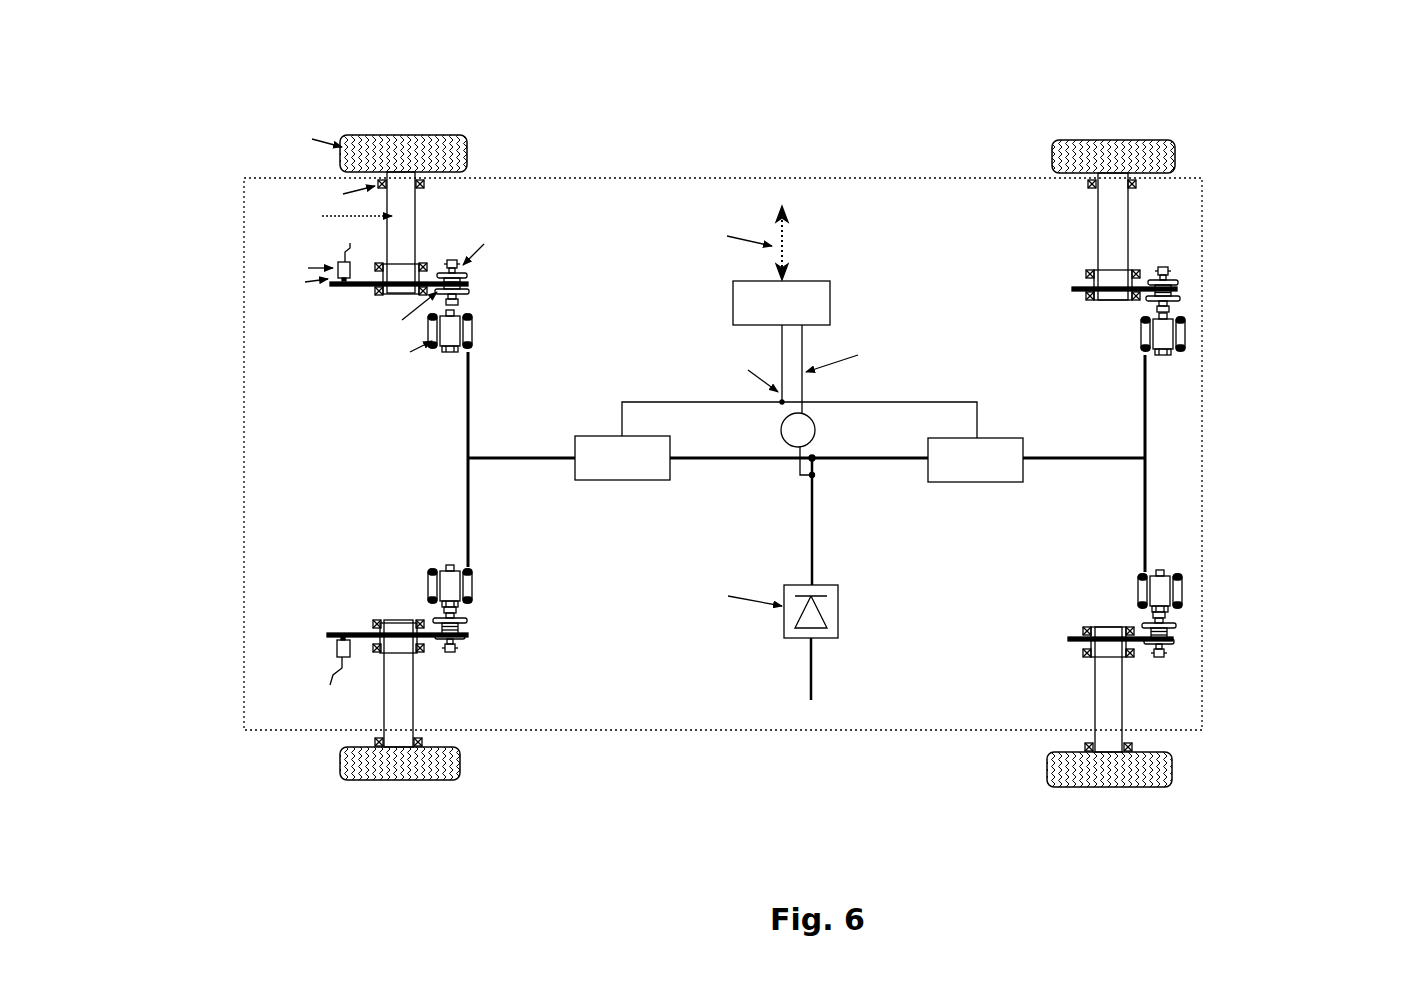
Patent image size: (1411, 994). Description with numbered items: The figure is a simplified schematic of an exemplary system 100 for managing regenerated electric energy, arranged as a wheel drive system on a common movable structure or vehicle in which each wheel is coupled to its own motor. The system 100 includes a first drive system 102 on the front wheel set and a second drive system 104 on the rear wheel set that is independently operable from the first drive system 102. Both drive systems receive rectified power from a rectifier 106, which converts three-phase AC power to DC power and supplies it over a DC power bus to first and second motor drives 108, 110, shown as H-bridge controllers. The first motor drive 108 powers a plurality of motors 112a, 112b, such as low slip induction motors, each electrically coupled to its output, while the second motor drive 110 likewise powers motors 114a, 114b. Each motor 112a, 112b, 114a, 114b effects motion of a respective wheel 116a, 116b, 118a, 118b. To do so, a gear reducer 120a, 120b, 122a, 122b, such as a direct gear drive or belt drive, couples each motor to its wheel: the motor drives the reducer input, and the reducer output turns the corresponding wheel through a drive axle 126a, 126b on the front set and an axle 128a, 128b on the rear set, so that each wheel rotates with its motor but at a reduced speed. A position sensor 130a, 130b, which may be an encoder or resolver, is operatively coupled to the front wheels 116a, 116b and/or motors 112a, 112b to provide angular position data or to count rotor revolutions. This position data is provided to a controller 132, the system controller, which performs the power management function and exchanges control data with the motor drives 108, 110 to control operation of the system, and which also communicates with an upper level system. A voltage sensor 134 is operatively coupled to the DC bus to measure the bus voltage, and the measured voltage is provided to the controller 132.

The system 100 is at (295, 67).
The first drive system 102 is at (597, 136).
The second drive system 104 is at (938, 162).
The rectifier 106 is at (840, 720).
The first motor drive 108 is at (607, 481).
The second motor drive 110 is at (975, 483).
The motor 112a is at (473, 327).
The motor 112b is at (473, 580).
The motor 114a is at (1185, 325).
The motor 114b is at (1185, 580).
The wheel 116a is at (362, 140).
The wheel 116b is at (363, 783).
The wheel 118a is at (1082, 132).
The wheel 118b is at (1052, 785).
The gear reducer 120a is at (397, 286).
The gear reducer 120b is at (437, 630).
The gear reducer 122a is at (1135, 293).
The gear reducer 122b is at (1143, 632).
The drive axle 126a is at (418, 214).
The drive axle 126b is at (465, 688).
The axle 128a is at (1160, 210).
The axle 128b is at (1170, 700).
The position sensor 130a is at (343, 249).
The position sensor 130b is at (331, 677).
The controller 132 is at (820, 281).
The voltage sensor 134 is at (818, 428).